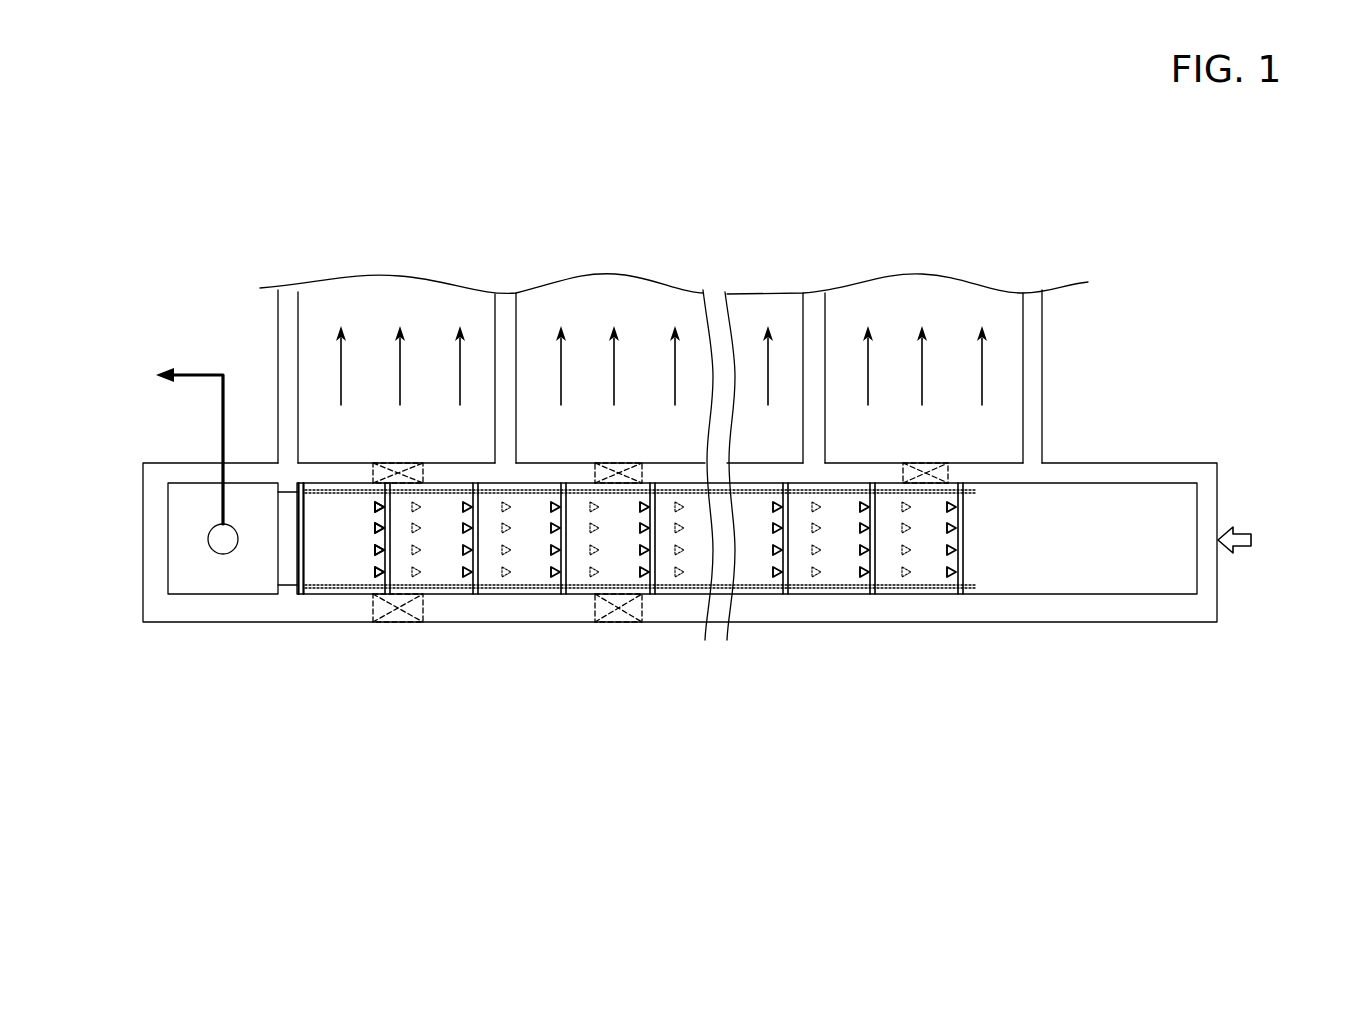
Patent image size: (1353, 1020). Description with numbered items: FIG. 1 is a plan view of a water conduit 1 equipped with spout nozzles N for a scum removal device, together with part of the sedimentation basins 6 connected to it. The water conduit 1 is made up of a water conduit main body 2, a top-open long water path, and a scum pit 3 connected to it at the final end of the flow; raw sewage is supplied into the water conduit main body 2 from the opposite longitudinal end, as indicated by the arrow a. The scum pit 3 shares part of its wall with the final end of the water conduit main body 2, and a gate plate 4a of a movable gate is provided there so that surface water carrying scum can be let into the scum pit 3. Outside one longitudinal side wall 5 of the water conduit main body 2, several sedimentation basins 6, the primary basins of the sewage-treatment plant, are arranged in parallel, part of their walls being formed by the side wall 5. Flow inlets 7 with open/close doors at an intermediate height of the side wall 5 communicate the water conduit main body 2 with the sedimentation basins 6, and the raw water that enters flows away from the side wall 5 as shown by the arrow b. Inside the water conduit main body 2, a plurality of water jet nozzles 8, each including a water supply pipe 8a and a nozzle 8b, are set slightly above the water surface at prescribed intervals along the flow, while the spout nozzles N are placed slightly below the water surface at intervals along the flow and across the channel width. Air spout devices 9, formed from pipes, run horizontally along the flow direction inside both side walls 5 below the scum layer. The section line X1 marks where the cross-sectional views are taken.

The water conduit 1 is at (1247, 425).
The water conduit main body 2 is at (1172, 458).
The scum pit 3 is at (203, 585).
The gate plate 4a is at (298, 565).
The side wall 5 is at (1063, 478).
The sedimentation basin 6 is at (408, 315).
The flow inlet 7 is at (398, 470).
The water jet nozzle 8 is at (455, 515).
The water supply pipe 8a is at (377, 519).
The nozzle 8b is at (377, 549).
The air spout device 9 is at (975, 489).
The spout nozzle N is at (428, 560).
The arrow b is at (342, 373).
The arrow a is at (1242, 546).
The section line X1 is at (1293, 540).